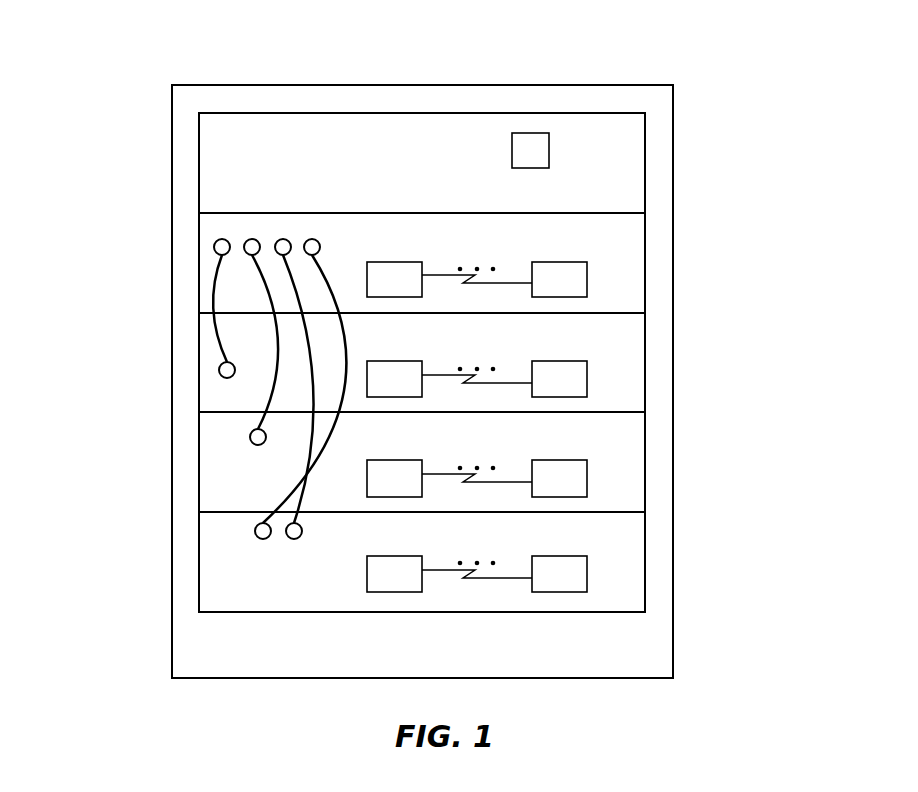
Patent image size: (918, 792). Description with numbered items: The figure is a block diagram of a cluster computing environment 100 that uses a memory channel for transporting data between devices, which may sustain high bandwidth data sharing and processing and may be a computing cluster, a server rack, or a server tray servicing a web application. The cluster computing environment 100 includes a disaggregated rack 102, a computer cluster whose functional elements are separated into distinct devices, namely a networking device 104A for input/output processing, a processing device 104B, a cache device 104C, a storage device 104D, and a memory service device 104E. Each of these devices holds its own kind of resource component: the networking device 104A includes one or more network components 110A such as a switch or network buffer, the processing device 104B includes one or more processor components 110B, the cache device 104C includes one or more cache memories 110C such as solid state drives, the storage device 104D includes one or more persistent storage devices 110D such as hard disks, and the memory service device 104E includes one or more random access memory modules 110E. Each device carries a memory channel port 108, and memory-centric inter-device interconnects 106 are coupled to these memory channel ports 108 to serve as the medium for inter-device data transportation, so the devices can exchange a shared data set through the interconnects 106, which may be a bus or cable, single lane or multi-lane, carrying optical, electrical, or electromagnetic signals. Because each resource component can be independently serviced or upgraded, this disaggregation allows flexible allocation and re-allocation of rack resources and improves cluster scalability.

The cluster computing environment 100 is at (128, 42).
The disaggregated rack 102 is at (172, 105).
The networking device 104A is at (622, 151).
The processing device 104B is at (622, 245).
The cache device 104C is at (620, 345).
The storage device 104D is at (620, 443).
The memory service device 104E is at (620, 540).
The memory-centric inter-device interconnect 106 is at (340, 402).
The memory channel port 108 is at (312, 247).
The network component 110A is at (545, 142).
The processor component 110B is at (587, 275).
The cache memory 110C is at (587, 380).
The persistent storage device 110D is at (587, 483).
The random access memory module 110E is at (587, 580).